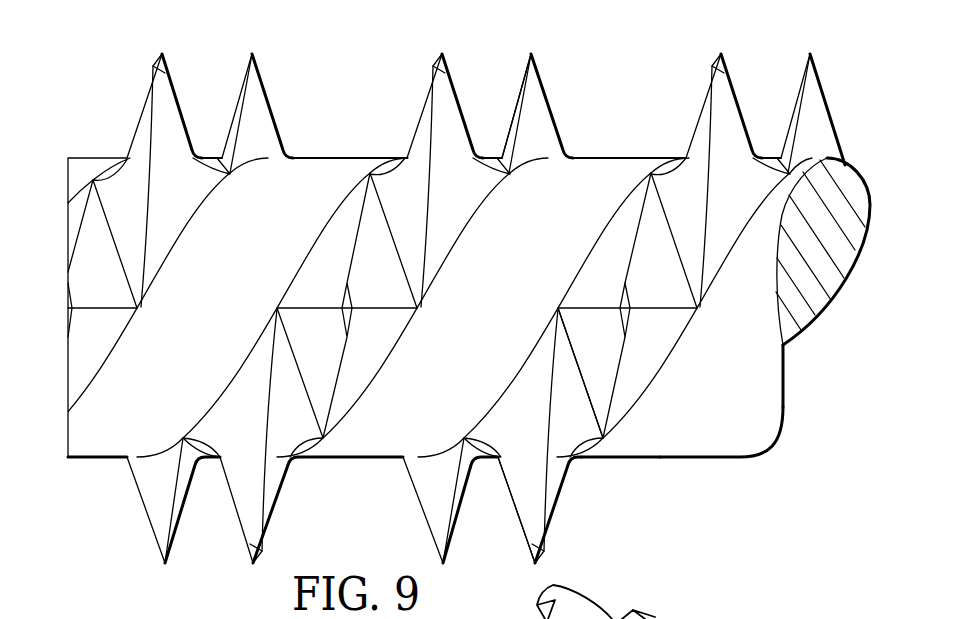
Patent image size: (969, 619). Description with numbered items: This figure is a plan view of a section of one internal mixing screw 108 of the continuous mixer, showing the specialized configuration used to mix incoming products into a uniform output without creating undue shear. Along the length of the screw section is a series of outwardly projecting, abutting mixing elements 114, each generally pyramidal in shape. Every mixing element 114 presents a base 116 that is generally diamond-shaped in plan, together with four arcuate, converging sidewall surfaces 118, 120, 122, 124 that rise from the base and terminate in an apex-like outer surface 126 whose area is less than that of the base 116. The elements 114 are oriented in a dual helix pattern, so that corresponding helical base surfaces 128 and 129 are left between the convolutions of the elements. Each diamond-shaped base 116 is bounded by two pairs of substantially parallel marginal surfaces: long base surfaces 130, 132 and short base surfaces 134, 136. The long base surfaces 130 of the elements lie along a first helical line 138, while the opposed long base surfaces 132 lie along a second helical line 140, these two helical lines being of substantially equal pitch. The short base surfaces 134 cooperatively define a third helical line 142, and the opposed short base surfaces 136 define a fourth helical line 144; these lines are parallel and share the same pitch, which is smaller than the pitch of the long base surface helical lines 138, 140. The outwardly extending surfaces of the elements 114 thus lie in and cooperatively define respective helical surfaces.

The mixing screw 108 is at (603, 160).
The mixing element 114 is at (540, 112).
The base 116 is at (592, 412).
The converging sidewall surface 118 is at (583, 325).
The converging sidewall surface 120 is at (636, 352).
The converging sidewall surface 122 is at (663, 273).
The converging sidewall surface 124 is at (600, 268).
The outer surface 126 is at (652, 312).
The helical base surface 128 is at (397, 437).
The helical base surface 129 is at (316, 171).
The long base surface 130 is at (625, 212).
The long base surface 132 is at (635, 392).
The short base surface 134 is at (552, 405).
The short base surface 136 is at (663, 208).
The first helical line 138 is at (512, 380).
The second helical line 140 is at (630, 428).
The third helical line 142 is at (547, 350).
The fourth helical line 144 is at (657, 163).